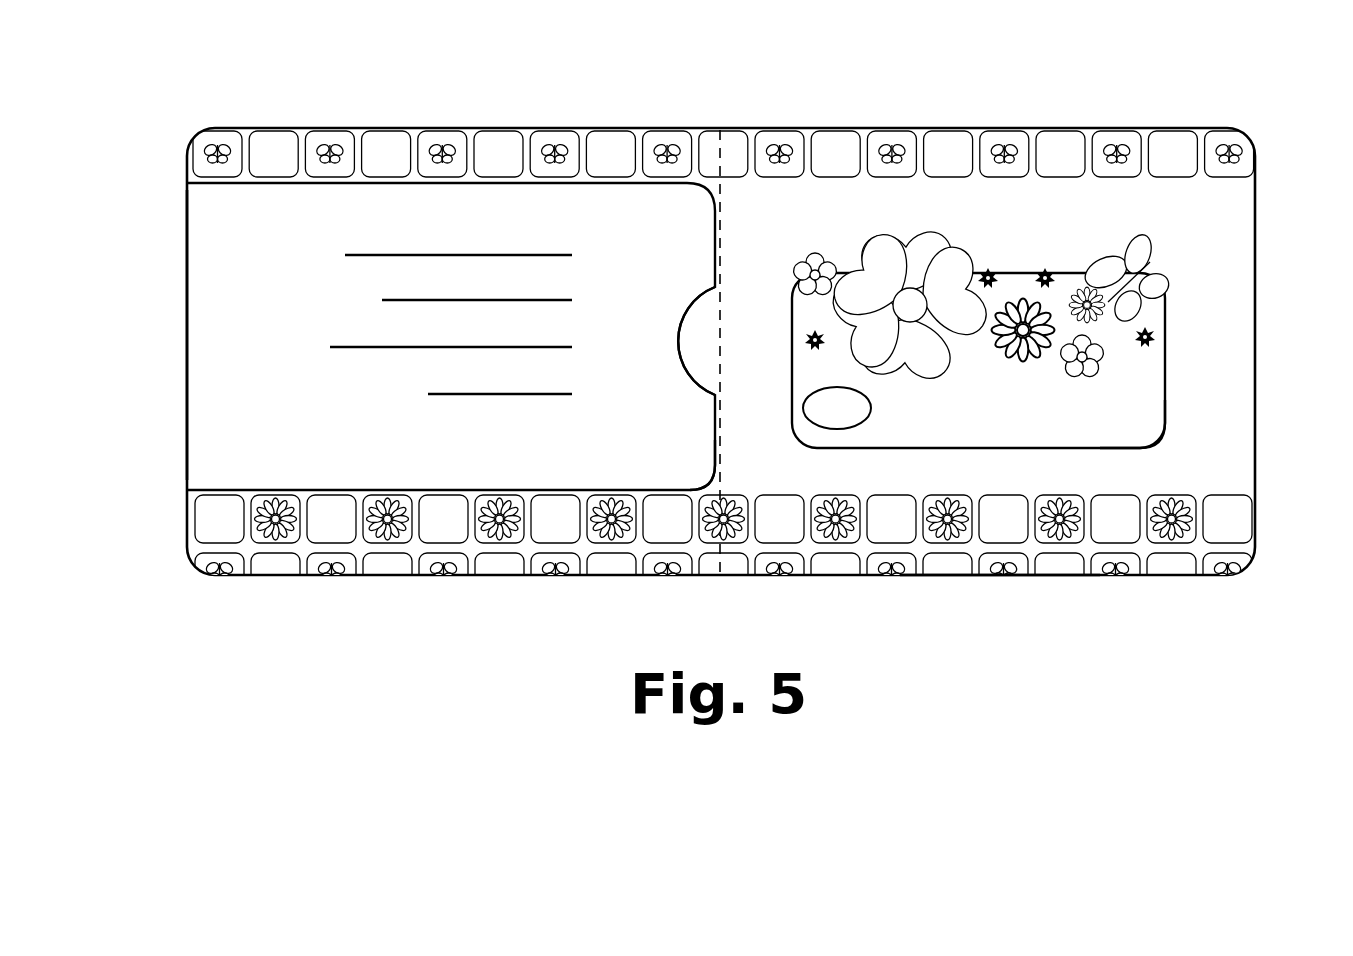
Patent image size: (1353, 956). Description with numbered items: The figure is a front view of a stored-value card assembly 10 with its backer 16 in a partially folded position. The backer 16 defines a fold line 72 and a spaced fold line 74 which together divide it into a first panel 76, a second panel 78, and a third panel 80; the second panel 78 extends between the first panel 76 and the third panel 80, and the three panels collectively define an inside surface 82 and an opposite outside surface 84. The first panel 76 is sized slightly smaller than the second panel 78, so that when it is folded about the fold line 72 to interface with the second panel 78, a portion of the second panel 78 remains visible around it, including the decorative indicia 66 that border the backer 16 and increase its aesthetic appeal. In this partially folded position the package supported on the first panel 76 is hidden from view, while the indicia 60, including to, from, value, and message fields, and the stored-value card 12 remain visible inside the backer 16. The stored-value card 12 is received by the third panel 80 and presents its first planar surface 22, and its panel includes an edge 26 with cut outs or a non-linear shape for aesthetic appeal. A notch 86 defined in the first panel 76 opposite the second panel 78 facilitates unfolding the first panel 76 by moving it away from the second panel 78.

The stored-value card assembly 10 is at (1166, 82).
The stored-value card 12 is at (1128, 384).
The backer 16 is at (1210, 243).
The first planar surface 22 is at (1142, 428).
The edge 26 is at (926, 214).
The indicia 60 is at (420, 238).
The decorative indicia 66 is at (617, 130).
The fold line 72 is at (185, 448).
The fold line 74 is at (713, 462).
The first panel 76 is at (237, 362).
The second panel 78 is at (363, 548).
The third panel 80 is at (1007, 470).
The inside surface 82 is at (303, 547).
The outside surface 84 is at (215, 290).
The notch 86 is at (722, 298).